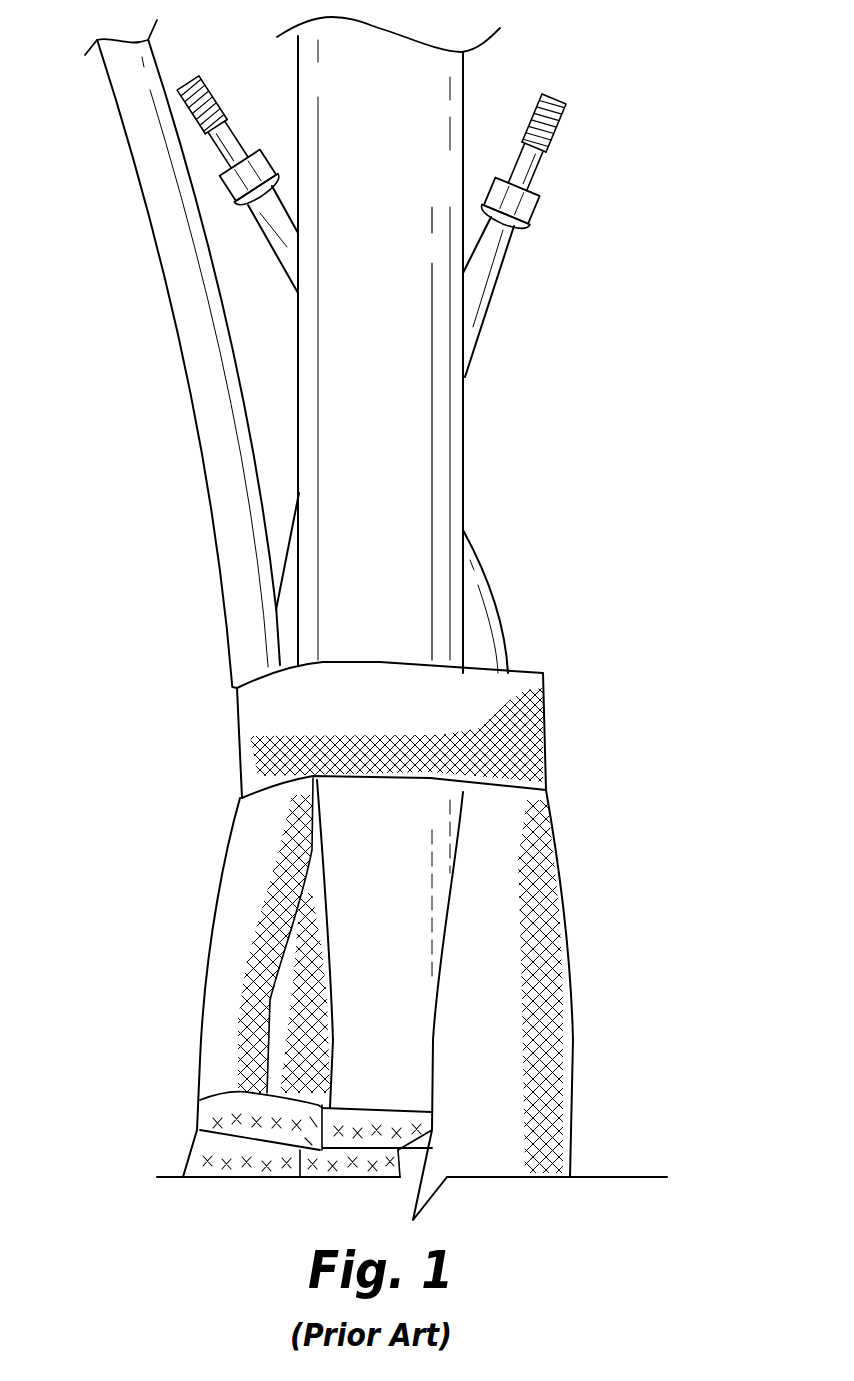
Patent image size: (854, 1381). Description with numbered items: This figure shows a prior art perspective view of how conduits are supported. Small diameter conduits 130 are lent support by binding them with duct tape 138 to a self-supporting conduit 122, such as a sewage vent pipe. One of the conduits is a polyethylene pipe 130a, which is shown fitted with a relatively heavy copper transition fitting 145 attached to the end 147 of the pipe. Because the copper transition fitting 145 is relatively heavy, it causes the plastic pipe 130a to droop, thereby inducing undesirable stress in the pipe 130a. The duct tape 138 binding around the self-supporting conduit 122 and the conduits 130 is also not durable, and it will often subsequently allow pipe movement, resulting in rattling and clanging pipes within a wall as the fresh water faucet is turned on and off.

The self-supporting conduit 122 is at (463, 92).
The small diameter conduit 130 is at (188, 330).
The polyethylene pipe 130a is at (510, 266).
The duct tape 138 is at (257, 723).
The copper transition fitting 145 is at (567, 118).
The end of the conduit 147 is at (540, 207).